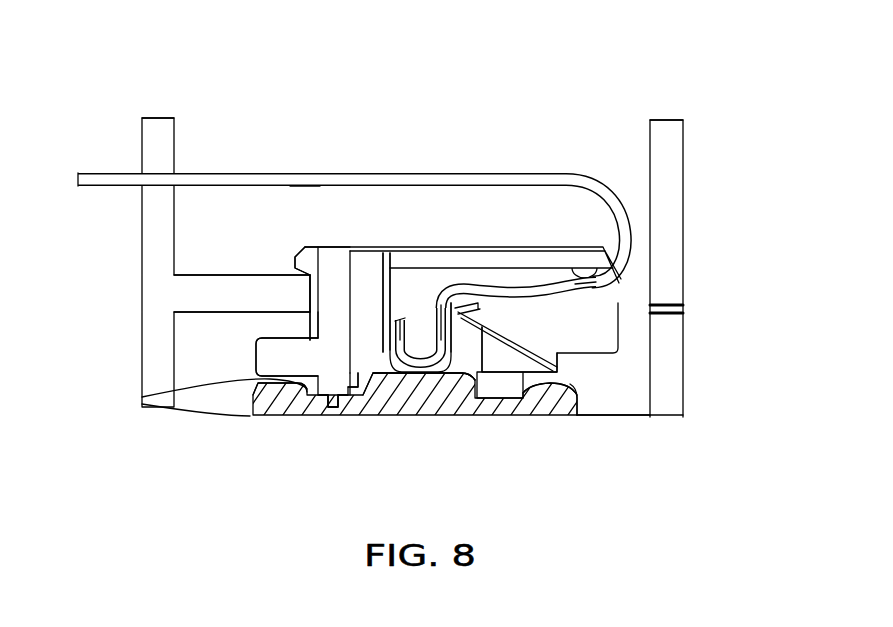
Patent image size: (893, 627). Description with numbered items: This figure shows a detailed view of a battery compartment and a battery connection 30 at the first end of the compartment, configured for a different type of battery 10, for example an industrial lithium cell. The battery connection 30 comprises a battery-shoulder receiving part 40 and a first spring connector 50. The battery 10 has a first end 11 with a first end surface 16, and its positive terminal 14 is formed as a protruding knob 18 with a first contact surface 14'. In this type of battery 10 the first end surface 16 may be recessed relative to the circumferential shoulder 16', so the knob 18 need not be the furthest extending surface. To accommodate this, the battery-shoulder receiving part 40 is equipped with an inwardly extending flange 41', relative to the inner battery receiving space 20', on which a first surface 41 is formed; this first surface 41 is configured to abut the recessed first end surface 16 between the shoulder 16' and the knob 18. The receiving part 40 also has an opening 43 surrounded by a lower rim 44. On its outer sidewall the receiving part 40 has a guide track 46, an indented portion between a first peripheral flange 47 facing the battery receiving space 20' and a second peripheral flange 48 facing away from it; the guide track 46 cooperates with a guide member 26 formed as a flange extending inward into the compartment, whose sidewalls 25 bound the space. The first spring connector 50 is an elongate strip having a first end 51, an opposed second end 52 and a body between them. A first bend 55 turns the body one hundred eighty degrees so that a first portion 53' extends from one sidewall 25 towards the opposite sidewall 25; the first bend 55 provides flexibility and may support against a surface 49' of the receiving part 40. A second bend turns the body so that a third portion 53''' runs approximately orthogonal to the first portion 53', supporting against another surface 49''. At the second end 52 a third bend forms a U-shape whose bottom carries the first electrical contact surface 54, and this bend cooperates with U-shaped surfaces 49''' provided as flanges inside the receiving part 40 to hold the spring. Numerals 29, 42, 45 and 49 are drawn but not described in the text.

The battery 10 is at (270, 405).
The first end 11 is at (598, 395).
The positive terminal 14 is at (424, 409).
The first contact surface 14' is at (369, 226).
The first end surface 16 is at (338, 360).
The circumferential shoulder 16' is at (248, 435).
The knob 18 is at (443, 392).
The inner battery receiving space 20' is at (662, 374).
The sidewall 25 is at (152, 128).
The guide member 26 is at (240, 290).
The base line 29 is at (688, 407).
The battery connection 30 is at (638, 90).
The battery-shoulder receiving part 40 is at (594, 313).
The first surface 41 is at (327, 440).
The inwardly extending flange 41' is at (303, 450).
The insertion direction 42 is at (317, 232).
The opening 43 is at (348, 390).
The lower rim 44 is at (363, 368).
The plate end 45 is at (587, 403).
The guide track 46 is at (288, 328).
The first peripheral flange 47 is at (275, 352).
The second peripheral flange 48 is at (303, 264).
The spring arm 49 is at (518, 217).
The surface 49' is at (675, 268).
The another surface 49'' is at (513, 232).
The U-shaped surfaces 49''' is at (417, 225).
The first spring connector 50 is at (217, 98).
The first end 51 is at (80, 173).
The second end 52 is at (410, 312).
The first portion 53' is at (296, 140).
The third portion 53''' is at (472, 214).
The first electrical contact surface 54 is at (410, 378).
The first bend 55 is at (624, 208).